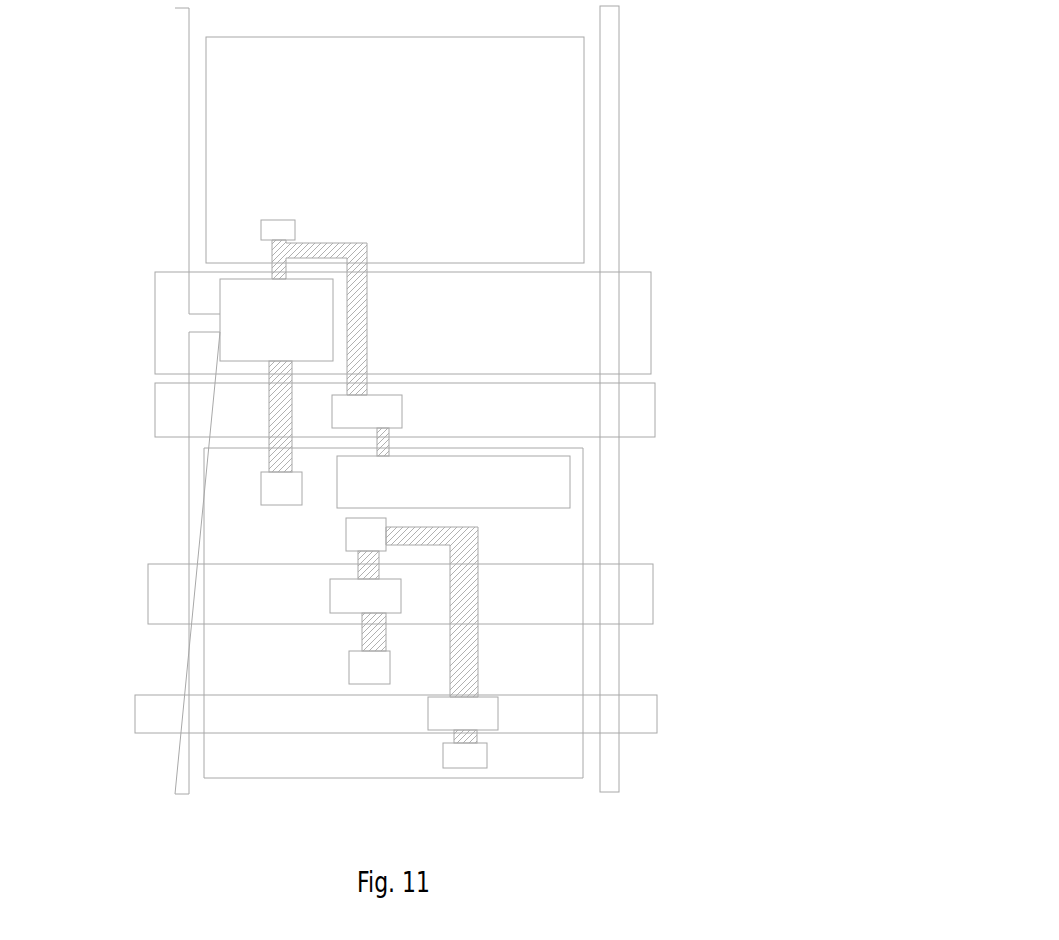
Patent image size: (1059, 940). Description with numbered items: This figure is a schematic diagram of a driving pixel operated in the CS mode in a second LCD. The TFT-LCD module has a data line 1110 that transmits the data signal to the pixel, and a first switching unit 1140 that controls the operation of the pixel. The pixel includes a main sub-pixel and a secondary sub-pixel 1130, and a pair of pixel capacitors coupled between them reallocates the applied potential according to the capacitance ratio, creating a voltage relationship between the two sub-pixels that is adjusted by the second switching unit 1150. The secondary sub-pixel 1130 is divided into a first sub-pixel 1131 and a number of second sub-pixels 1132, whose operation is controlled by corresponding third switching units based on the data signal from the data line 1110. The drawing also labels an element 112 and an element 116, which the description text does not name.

The data line 1110 is at (180, 158).
The pixel electrode 112 is at (579, 122).
The first switching unit 1140 is at (248, 317).
The second switching unit 1150 is at (402, 415).
The secondary sub-pixel 1130 is at (583, 490).
The first sub-pixel 1131 is at (560, 542).
The second sub-pixel 1132 is at (560, 678).
The connection electrode 116 is at (391, 600).